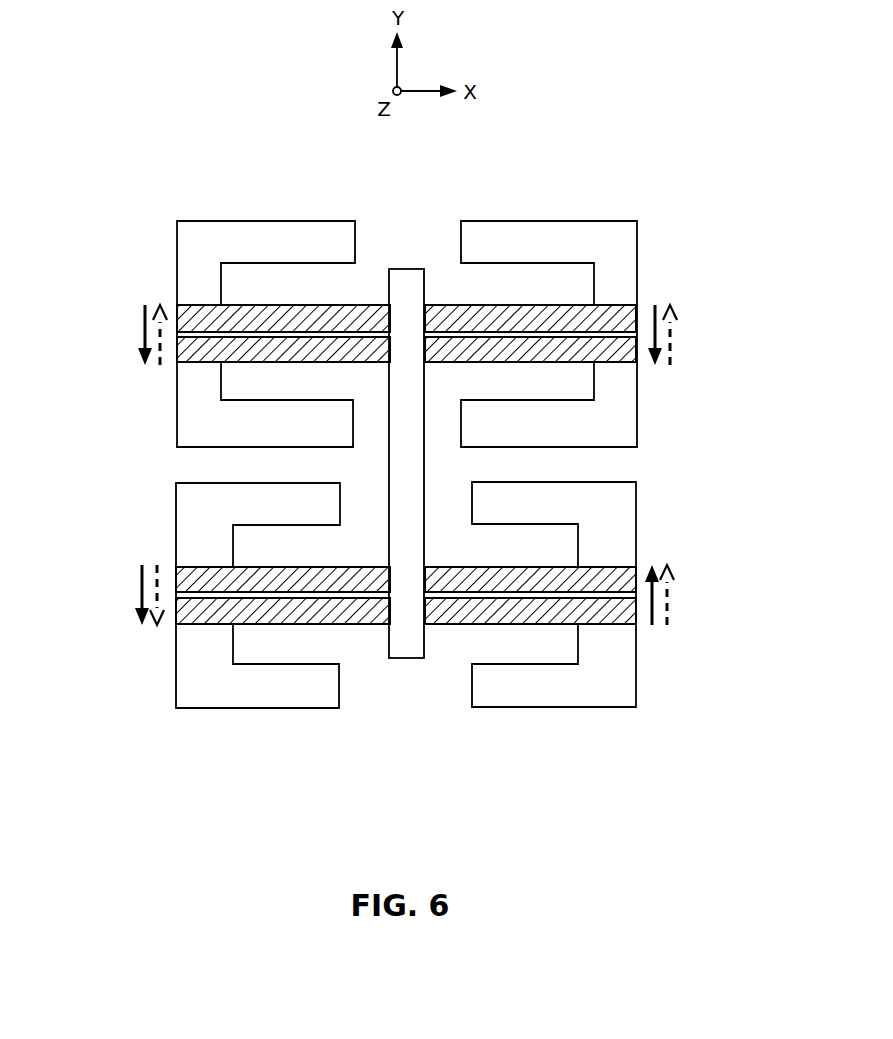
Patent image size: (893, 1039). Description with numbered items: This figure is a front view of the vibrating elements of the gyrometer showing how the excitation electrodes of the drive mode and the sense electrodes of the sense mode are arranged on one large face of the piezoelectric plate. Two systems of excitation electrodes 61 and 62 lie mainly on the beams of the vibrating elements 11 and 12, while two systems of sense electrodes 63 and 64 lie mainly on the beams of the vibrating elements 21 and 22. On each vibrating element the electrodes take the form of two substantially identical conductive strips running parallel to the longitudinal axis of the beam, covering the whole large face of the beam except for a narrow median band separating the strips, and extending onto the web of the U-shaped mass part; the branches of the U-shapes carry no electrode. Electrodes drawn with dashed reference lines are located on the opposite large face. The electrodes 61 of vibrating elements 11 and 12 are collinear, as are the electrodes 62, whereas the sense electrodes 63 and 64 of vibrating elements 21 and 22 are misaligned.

The vibrating element 11 is at (160, 212).
The vibrating element 12 is at (657, 210).
The vibrating element 21 is at (158, 720).
The vibrating element 22 is at (655, 716).
The excitation electrode 61 is at (266, 318).
The excitation electrode 62 is at (317, 316).
The sense electrode 63 is at (300, 578).
The sense electrode 64 is at (490, 580).